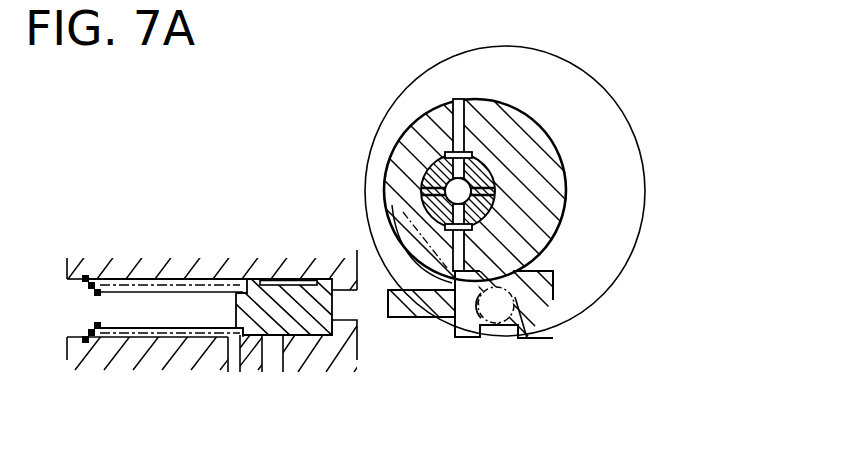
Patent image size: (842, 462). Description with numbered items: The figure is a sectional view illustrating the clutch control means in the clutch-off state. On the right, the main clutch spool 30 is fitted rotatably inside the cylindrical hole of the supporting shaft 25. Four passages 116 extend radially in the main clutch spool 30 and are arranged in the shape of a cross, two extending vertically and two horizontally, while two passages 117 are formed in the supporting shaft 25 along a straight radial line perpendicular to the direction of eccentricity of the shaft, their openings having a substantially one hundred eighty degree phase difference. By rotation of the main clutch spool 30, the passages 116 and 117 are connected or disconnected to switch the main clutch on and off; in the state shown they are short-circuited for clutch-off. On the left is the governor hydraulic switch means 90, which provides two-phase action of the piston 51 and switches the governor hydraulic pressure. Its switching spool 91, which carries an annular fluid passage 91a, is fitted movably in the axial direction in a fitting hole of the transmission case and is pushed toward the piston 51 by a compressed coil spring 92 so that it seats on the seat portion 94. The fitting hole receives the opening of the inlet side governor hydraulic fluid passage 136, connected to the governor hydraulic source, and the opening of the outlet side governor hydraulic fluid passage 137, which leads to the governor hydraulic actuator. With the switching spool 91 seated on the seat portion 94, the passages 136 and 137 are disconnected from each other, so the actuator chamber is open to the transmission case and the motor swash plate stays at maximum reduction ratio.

The supporting shaft 25 is at (550, 200).
The main clutch spool 30 is at (425, 170).
The piston 51 is at (532, 317).
The switch means 90 is at (180, 283).
The switching spool 91 is at (300, 307).
The annular fluid passage 91a is at (277, 290).
The compressed coil spring 92 is at (153, 338).
The seat portion 94 is at (333, 327).
The passages 116 is at (445, 172).
The passages 117 is at (457, 123).
The inlet side governor hydraulic fluid passage 136 is at (275, 355).
The outlet side governor hydraulic fluid passage 137 is at (231, 345).